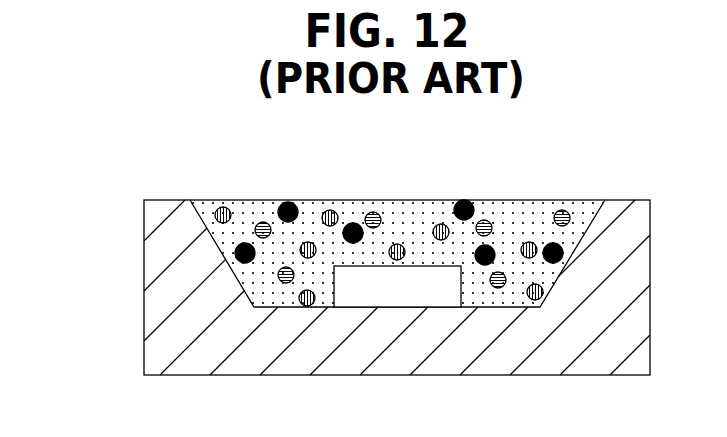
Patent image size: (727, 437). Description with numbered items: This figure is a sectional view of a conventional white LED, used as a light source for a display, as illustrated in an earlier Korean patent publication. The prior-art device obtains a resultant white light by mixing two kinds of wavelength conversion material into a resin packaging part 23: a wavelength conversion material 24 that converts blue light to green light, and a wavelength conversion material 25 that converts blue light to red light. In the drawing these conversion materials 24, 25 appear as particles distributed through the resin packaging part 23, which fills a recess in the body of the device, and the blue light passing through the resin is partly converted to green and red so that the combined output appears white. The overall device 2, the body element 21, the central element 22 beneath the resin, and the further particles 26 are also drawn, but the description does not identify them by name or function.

The light emitting device package (prior art) 2 is at (126, 208).
The package body / substrate 21 is at (250, 358).
The light emitting diode chip 22 is at (383, 293).
The resin packaging part 23 is at (257, 283).
The wavelength conversion material 24 is at (535, 300).
The wavelength conversion material 25 is at (498, 288).
The third phosphor particles 26 is at (563, 252).